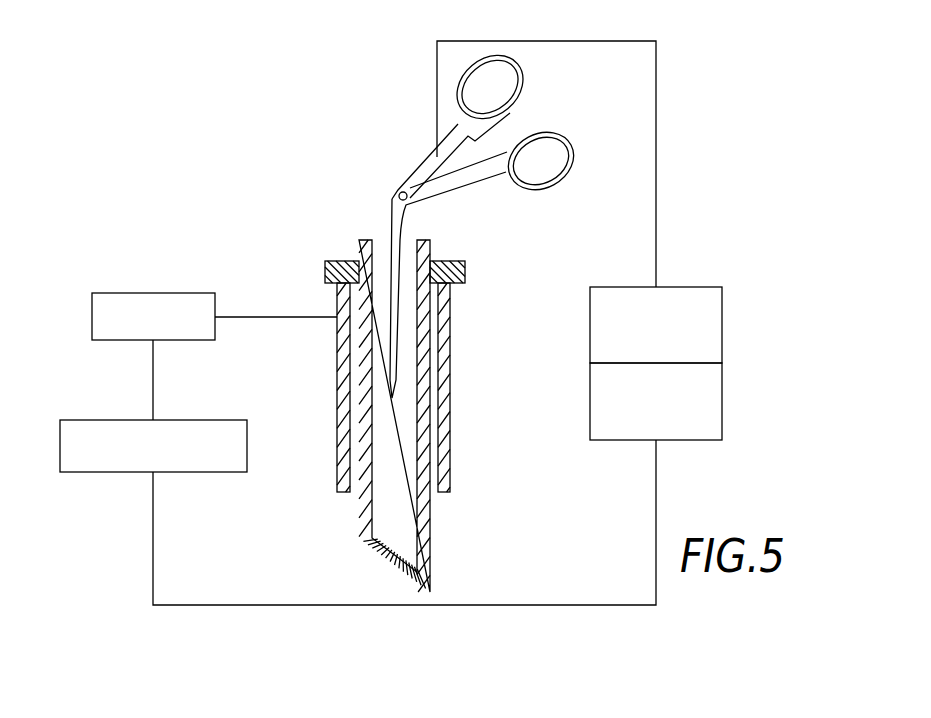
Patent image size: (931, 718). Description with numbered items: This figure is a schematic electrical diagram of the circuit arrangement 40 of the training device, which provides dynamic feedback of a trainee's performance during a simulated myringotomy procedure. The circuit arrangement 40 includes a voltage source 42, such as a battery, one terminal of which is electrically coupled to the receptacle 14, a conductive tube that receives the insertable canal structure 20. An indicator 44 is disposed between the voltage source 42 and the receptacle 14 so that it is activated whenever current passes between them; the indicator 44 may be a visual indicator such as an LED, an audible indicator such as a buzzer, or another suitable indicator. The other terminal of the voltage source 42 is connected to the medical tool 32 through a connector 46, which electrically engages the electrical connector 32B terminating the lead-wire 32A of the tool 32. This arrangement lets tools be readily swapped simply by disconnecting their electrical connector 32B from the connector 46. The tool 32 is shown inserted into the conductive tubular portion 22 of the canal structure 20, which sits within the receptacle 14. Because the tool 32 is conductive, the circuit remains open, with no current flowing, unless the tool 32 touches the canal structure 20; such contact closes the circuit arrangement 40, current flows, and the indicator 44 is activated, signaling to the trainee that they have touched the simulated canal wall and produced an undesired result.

The receptacle 14 is at (445, 327).
The insertable canal structure 20 is at (421, 393).
The tubular portion 22 is at (425, 398).
The medical tool 32 is at (392, 200).
The lead-wire 32A is at (656, 78).
The electrical connector 32B is at (723, 308).
The circuit arrangement 40 is at (699, 166).
The voltage source 42 is at (80, 420).
The indicator 44 is at (118, 293).
The connector 46 is at (723, 393).